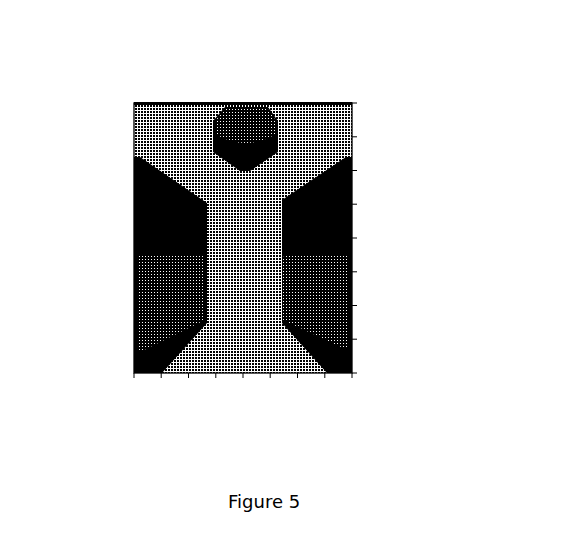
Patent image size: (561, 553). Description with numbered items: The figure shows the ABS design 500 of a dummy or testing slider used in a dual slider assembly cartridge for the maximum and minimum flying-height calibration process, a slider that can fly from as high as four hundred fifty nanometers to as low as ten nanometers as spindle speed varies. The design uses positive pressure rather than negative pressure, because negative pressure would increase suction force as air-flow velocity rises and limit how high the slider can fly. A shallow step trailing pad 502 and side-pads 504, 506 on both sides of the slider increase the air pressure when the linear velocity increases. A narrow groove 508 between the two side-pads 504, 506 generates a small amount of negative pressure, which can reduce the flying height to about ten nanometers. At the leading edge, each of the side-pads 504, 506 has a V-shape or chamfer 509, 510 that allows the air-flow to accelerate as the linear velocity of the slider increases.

The ABS design 500 is at (297, 92).
The shallow step trailing pad 502 is at (218, 120).
The side-pad 504 is at (138, 260).
The side-pad 506 is at (351, 255).
The narrow groove 508 is at (225, 214).
The V-shape or chamfer 509 is at (198, 366).
The V-shape or chamfer 510 is at (290, 368).